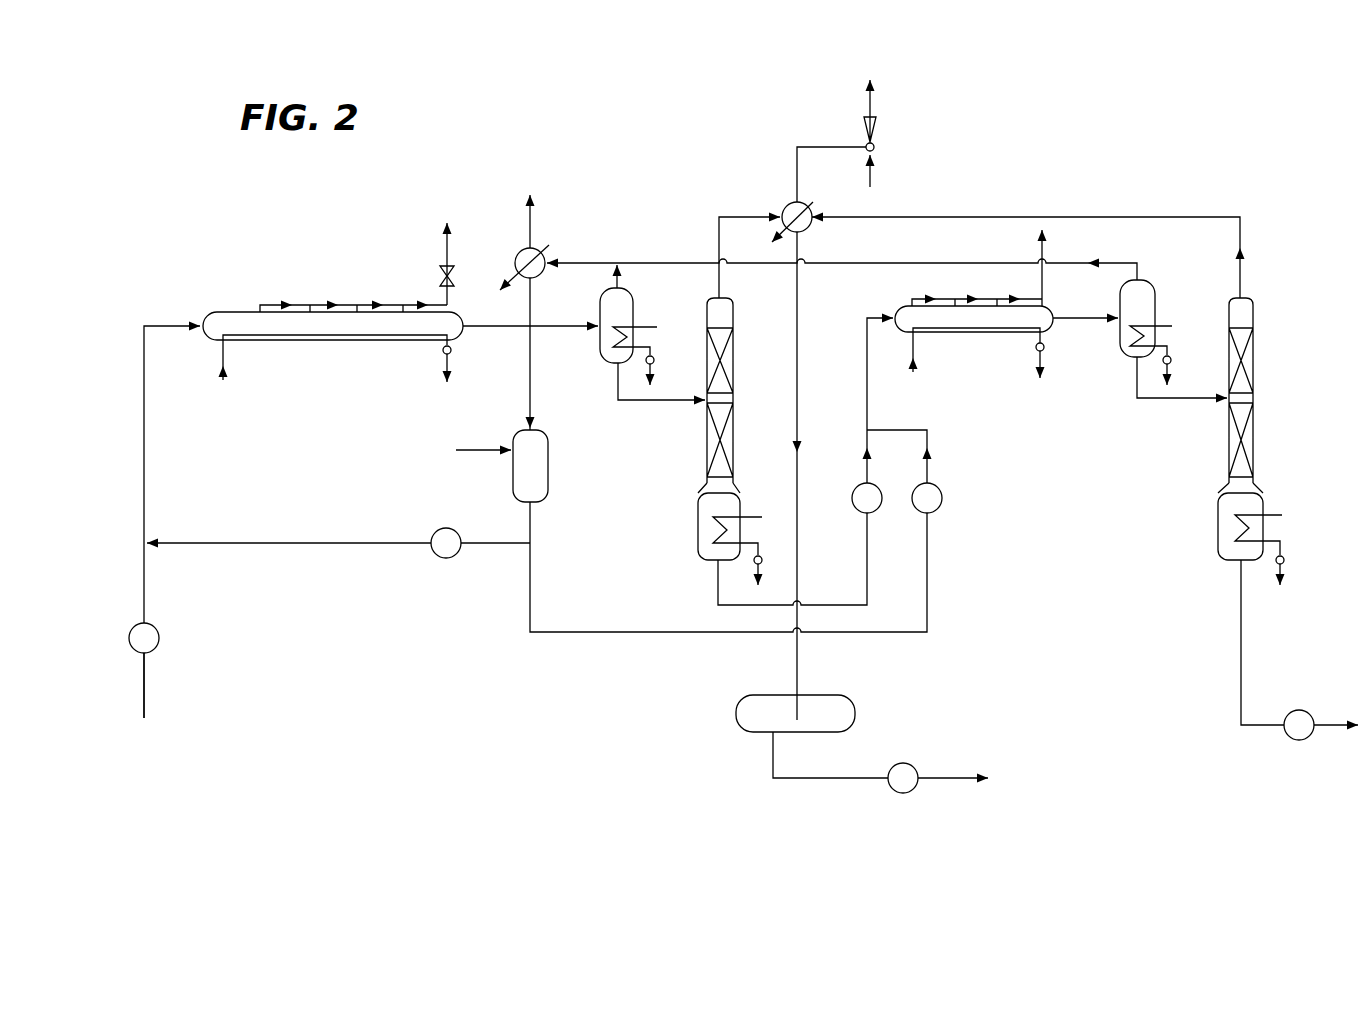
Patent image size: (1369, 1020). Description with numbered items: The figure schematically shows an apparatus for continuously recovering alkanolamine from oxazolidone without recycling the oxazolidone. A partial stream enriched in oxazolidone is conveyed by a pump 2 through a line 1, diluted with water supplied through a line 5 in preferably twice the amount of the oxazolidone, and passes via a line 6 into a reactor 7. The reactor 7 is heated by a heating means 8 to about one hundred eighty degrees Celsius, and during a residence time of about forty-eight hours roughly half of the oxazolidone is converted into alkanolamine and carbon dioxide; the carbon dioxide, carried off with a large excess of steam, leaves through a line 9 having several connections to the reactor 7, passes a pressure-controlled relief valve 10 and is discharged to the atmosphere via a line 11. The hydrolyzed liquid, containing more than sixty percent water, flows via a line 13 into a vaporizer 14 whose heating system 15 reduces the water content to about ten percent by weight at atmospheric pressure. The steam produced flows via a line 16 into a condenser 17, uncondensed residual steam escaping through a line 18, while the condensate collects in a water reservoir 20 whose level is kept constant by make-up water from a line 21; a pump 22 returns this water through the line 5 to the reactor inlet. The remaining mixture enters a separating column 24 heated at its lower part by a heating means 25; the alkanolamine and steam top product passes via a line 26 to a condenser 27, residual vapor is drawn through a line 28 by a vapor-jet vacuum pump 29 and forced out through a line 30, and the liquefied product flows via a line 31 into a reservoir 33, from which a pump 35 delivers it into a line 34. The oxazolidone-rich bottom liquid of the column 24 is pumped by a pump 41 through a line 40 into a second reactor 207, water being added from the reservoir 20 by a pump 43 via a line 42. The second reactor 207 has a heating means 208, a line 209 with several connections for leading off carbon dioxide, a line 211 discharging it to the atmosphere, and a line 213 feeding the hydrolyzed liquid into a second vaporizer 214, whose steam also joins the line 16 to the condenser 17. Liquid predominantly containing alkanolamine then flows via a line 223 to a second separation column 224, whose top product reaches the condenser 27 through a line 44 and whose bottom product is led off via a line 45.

The line 1 is at (147, 592).
The pump 2 is at (156, 648).
The line 5 is at (252, 540).
The line 6 is at (147, 447).
The reactor 7 is at (233, 308).
The heating means 8 is at (225, 355).
The line 9 is at (323, 303).
The pressure-controlled relief valve 10 is at (438, 273).
The line 11 is at (443, 250).
The line 13 is at (507, 330).
The vaporizer 14 is at (640, 300).
The heating system 15 is at (637, 334).
The line 16 is at (588, 260).
The condenser 17 is at (515, 252).
The line 18 is at (533, 229).
The water reservoir 20 is at (552, 460).
The line 21 is at (474, 447).
The pump 22 is at (437, 527).
The separating column 24 is at (738, 403).
The heating means 25 is at (757, 540).
The line 26 is at (716, 231).
The condenser 27 is at (782, 205).
The line 28 is at (818, 143).
The vapor-jet vacuum pump 29 is at (878, 148).
The line 30 is at (878, 107).
The line 31 is at (802, 400).
The reservoir 33 is at (733, 705).
The line 34 is at (947, 775).
The pump 35 is at (898, 763).
The line 40 is at (852, 602).
The pump 41 is at (857, 488).
The line 42 is at (862, 637).
The pump 43 is at (940, 492).
The line 44 is at (1245, 238).
The line 45 is at (1262, 720).
The second reactor 207 is at (970, 320).
The heating means 208 is at (915, 346).
The line 209 is at (965, 297).
The line 211 is at (1035, 250).
The line 213 is at (1082, 315).
The second vaporizer 214 is at (1113, 343).
The line 223 is at (1148, 403).
The second separation column 224 is at (1260, 400).